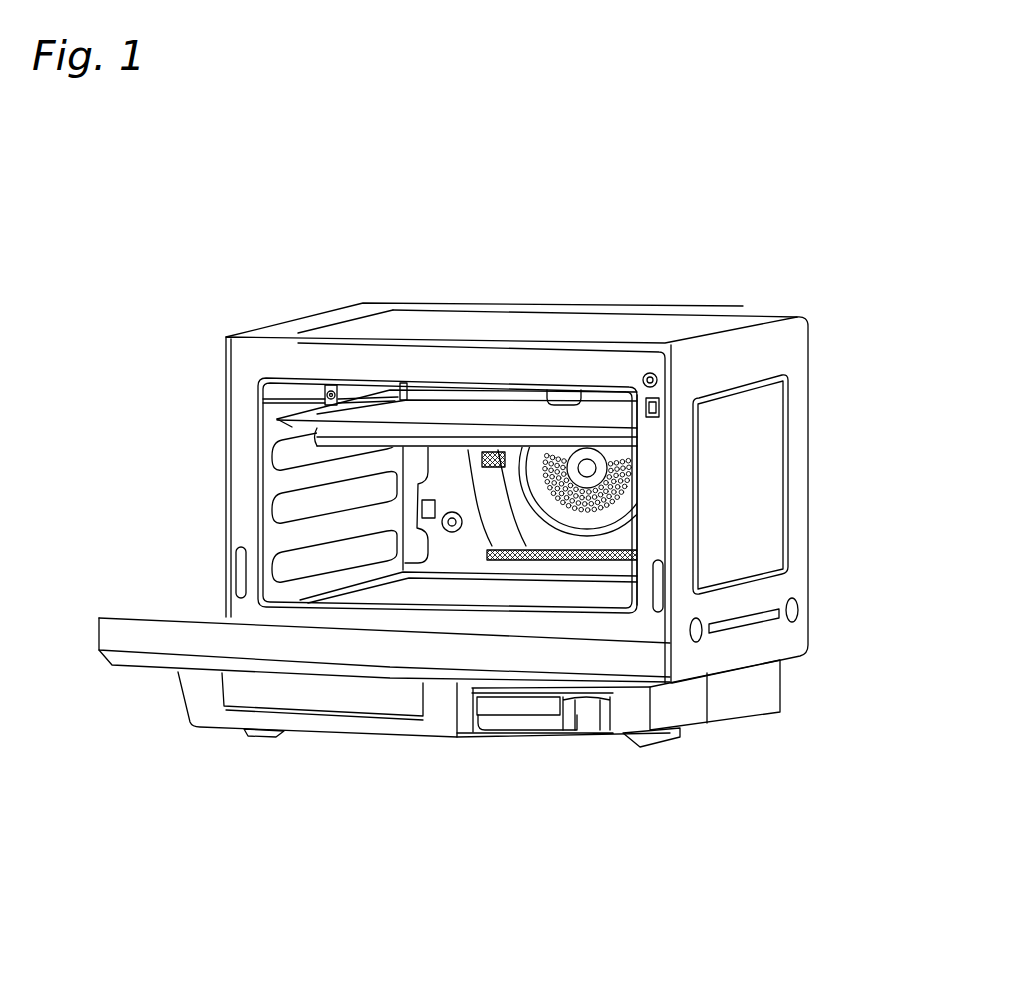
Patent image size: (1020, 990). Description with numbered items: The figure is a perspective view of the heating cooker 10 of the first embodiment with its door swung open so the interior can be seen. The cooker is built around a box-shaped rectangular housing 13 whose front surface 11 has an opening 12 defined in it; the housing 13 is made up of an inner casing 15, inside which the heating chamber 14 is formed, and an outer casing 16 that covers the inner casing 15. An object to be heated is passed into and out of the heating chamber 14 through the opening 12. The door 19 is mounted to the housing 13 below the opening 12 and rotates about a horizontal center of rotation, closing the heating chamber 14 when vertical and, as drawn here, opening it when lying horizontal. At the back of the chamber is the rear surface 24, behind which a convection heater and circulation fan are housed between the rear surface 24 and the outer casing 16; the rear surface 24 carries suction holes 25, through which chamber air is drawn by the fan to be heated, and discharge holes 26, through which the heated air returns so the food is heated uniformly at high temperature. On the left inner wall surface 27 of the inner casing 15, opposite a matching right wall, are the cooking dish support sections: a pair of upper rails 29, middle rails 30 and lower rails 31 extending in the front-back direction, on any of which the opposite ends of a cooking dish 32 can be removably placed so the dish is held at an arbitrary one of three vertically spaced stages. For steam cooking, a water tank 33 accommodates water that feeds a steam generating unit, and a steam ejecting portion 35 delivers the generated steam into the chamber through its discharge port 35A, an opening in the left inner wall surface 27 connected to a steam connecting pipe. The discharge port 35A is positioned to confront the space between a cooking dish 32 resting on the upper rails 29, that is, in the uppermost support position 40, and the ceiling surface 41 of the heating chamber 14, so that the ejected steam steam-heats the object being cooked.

The heating cooker 10 is at (417, 190).
The front surface 11 is at (243, 457).
The opening 12 is at (257, 400).
The housing 13 is at (779, 508).
The heating chamber 14 is at (607, 598).
The inner casing 15 is at (637, 490).
The outer casing 16 is at (750, 493).
The door 19 is at (102, 660).
The rear surface 24 is at (447, 562).
The suction holes 25 is at (620, 467).
The discharge holes 26 is at (538, 563).
The left inner wall surface 27 is at (268, 390).
The upper rails 29 is at (275, 458).
The middle rails 30 is at (268, 509).
The lower rails 31 is at (276, 566).
The cooking dish 32 is at (502, 389).
The water tank 33 is at (550, 724).
The steam ejecting portion 35 is at (312, 389).
The discharge port 35A is at (334, 384).
The uppermost support position 40 is at (260, 427).
The ceiling surface 41 is at (588, 394).